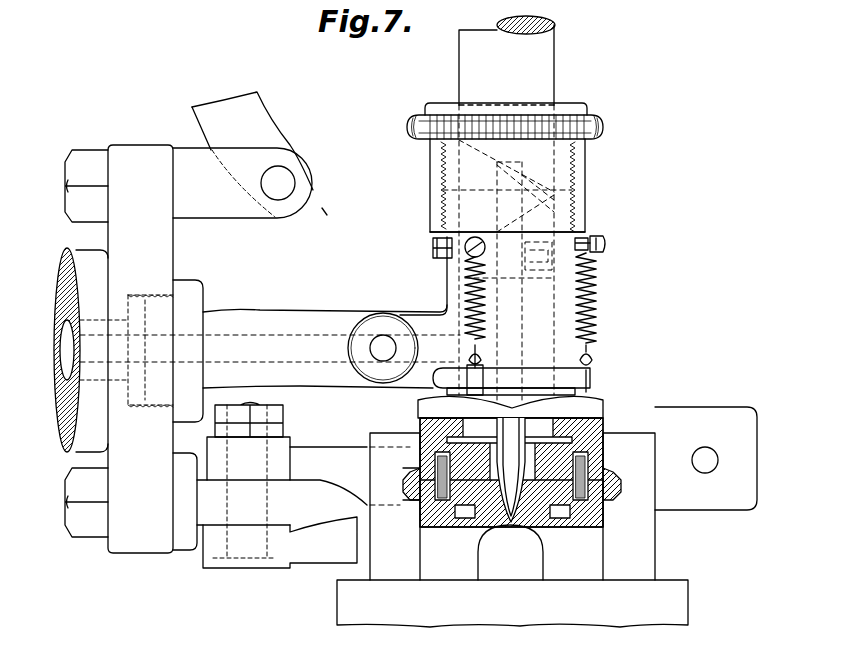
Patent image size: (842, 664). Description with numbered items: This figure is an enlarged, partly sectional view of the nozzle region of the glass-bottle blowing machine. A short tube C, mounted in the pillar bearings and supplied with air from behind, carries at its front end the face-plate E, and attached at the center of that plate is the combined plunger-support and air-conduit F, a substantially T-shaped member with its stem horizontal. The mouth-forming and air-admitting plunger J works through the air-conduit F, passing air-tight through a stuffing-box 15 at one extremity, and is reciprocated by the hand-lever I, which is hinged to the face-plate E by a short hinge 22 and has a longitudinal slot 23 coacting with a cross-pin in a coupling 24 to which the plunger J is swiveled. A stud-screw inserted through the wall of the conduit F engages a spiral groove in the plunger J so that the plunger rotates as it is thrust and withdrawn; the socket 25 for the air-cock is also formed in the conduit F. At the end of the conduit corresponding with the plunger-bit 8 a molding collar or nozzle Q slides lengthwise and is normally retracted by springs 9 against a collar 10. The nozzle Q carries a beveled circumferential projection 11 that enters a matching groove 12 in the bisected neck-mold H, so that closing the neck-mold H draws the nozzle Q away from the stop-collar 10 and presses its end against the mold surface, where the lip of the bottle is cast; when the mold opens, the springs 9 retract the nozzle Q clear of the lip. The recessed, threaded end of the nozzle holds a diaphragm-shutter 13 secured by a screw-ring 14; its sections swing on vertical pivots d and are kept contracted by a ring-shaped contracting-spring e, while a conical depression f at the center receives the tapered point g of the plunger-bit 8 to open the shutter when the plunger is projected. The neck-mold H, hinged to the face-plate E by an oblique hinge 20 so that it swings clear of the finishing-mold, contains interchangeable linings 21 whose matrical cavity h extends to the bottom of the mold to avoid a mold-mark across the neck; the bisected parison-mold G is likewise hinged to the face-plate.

The plunger-bit 8 is at (511, 470).
The springs 9 is at (465, 291).
The collar 10 is at (578, 382).
The circumferential projection 11 is at (415, 470).
The groove 12 is at (408, 502).
The diaphragm-shutter 13 is at (488, 518).
The screw-ring 14 is at (562, 522).
The stuffing-box 15 is at (566, 182).
The hinge 20 is at (282, 501).
The interchangeable linings 21 is at (455, 575).
The short hinge 22 is at (242, 183).
The longitudinal slot 23 is at (440, 250).
The coupling 24 is at (472, 153).
The socket 25 is at (373, 325).
The short tube C is at (49, 350).
The face-plate E is at (134, 349).
The combined plunger-support and air-conduit F is at (270, 346).
The bisected parison-mold G is at (512, 618).
The neck-mold H is at (563, 493).
The hand-lever I is at (259, 154).
The plunger J is at (507, 60).
The nozzle Q is at (590, 410).
The vertical pivots d is at (420, 436).
The ring-shaped contracting-spring e is at (460, 522).
The conical depression f is at (535, 493).
The tapered point g is at (508, 478).
The matrical cavity h is at (510, 552).